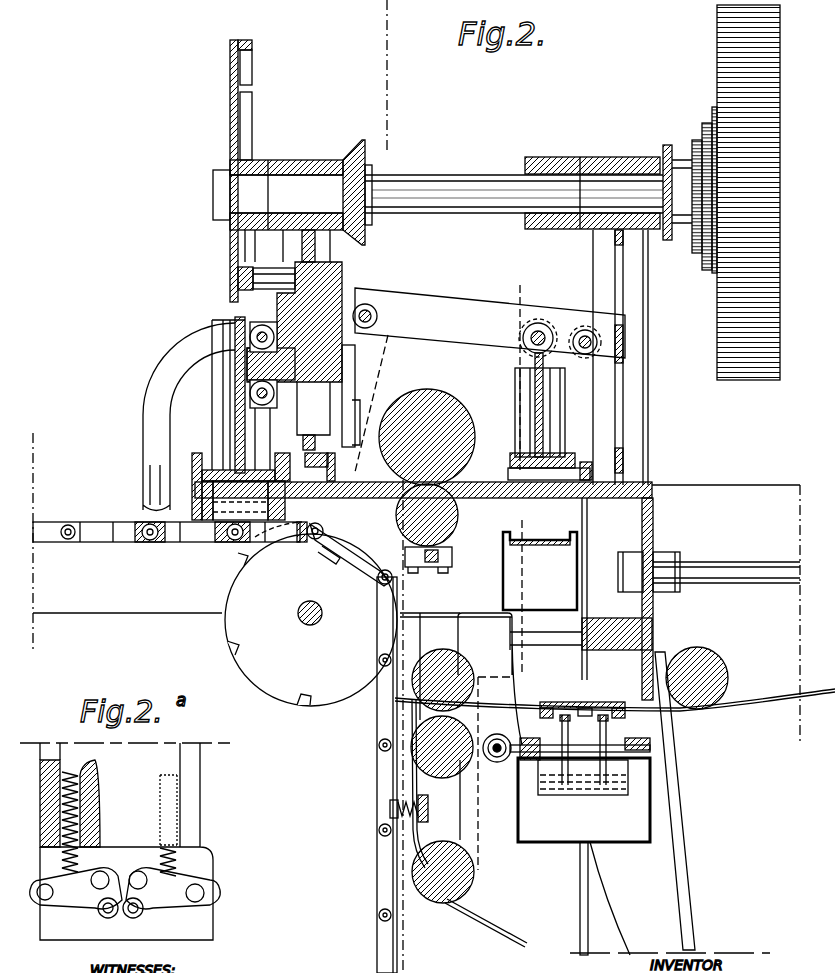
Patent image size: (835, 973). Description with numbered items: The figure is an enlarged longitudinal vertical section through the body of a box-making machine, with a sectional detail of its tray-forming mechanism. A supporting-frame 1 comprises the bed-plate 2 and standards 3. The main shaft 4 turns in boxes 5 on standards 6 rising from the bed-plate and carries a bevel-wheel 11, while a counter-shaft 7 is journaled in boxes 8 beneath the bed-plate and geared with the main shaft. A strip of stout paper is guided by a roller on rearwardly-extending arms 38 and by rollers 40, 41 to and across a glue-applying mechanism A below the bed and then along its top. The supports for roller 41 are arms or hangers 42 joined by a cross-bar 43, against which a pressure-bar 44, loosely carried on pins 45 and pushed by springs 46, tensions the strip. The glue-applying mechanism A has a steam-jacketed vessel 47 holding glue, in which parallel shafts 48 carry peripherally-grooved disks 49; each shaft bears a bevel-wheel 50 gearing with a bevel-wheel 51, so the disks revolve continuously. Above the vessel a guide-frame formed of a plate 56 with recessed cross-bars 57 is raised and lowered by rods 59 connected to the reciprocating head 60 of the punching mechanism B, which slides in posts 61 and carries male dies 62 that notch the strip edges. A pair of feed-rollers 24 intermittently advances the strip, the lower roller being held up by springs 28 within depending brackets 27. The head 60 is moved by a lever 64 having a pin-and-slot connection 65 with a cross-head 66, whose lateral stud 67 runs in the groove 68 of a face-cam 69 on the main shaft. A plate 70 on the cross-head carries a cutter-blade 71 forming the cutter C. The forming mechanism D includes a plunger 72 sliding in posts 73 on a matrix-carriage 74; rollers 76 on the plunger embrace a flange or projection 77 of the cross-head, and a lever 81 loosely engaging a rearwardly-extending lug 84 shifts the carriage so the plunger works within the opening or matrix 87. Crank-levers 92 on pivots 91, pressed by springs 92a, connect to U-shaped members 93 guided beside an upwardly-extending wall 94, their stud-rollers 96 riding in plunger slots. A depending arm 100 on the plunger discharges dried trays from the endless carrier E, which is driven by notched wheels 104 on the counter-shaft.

In FIG. 2, the supporting-frame 1 is at (120, 605).
In FIG. 2, the bed-plate 2 is at (648, 485).
In FIG. 2, the standards 3 is at (400, 723).
In FIG. 2, the main shaft 4 is at (452, 173).
In FIG. 2, the boxes 5 is at (305, 160).
In FIG. 2, the standards 6 is at (290, 243).
In FIG. 2, the counter-shaft 7 is at (308, 618).
In FIG. 2, the boxes 8 is at (748, 706).
In FIG. 2, the bevel-wheel 11 is at (352, 158).
In FIG. 2, the feed-rollers 24 is at (440, 400).
In FIG. 2, the depending brackets 27 is at (428, 573).
In FIG. 2, the springs 28 is at (438, 557).
In FIG. 2, the rearwardly-extending arms 38 is at (725, 562).
In FIG. 2, the roller 40 is at (715, 668).
In FIG. 2, the roller 41 is at (455, 665).
In FIG. 2, the arms or hangers 42 is at (460, 827).
In FIG. 2, the cross-bar 43 is at (428, 810).
In FIG. 2, the pressure-bar 44 is at (415, 800).
In FIG. 2, the pins 45 is at (390, 812).
In FIG. 2, the springs 46 is at (405, 805).
In FIG. 2, the steam-jacketed vessel 47 is at (688, 773).
In FIG. 2, the parallel shafts 48 is at (620, 740).
In FIG. 2, the peripherally-grooved disks 49 is at (584, 750).
In FIG. 2, the bevel-wheel 50 is at (515, 740).
In FIG. 2, the bevel-wheel 51 is at (497, 734).
In FIG. 2, the plate 56 is at (565, 700).
In FIG. 2, the cross-bars 57 is at (547, 704).
In FIG. 2, the rods 59 is at (587, 665).
In FIG. 2, the reciprocating head 60 is at (527, 385).
In FIG. 2, the posts 61 is at (515, 412).
In FIG. 2, the male dies 62 is at (510, 472).
In FIG. 2, the lever 64 is at (447, 310).
In FIG. 2, the pin-and-slot connection 65 is at (365, 304).
In FIG. 2, the cross-head 66 is at (342, 275).
In FIG. 2, the lateral stud 67 is at (238, 280).
In FIG. 2, the groove 68 is at (245, 66).
In FIG. 2, the face-cam 69 is at (230, 120).
In FIG. 2, the plate 70 is at (352, 372).
In FIG. 2, the cutter-blade 71 is at (371, 403).
In FIG. 2, the plunger 72 is at (235, 432).
In FIG. 2A, the posts 73 is at (200, 790).
In FIG. 2, the matrix-carriage 74 is at (196, 522).
In FIG. 2, the horizontal rollers 76 is at (258, 333).
In FIG. 2, the flange or projection 77 is at (250, 372).
In FIG. 2, the lever 81 is at (345, 540).
In FIG. 2, the rearwardly-extending lug 84 is at (318, 524).
In FIG. 2, the opening or matrix 87 is at (222, 522).
In FIG. 2A, the pivot 91 is at (136, 872).
In FIG. 2A, the crank-levers 92 is at (210, 893).
In FIG. 2A, the springs 92a is at (230, 862).
In FIG. 2, the U-shaped members 93 is at (200, 478).
In FIG. 2, the upwardly-extending wall 94 is at (192, 460).
In FIG. 2A, the stud-rollers 96 is at (133, 918).
In FIG. 2, the depending arm 100 is at (148, 437).
In FIG. 2, the wheels 104 is at (268, 690).
In FIG. 2, the glue-applying mechanism A is at (680, 808).
In FIG. 2, the punching mechanism B is at (556, 412).
In FIG. 2, the cutter C is at (355, 405).
In FIG. 2, the forming mechanism D is at (143, 398).
In FIG. 2, the endless carrier E is at (378, 953).